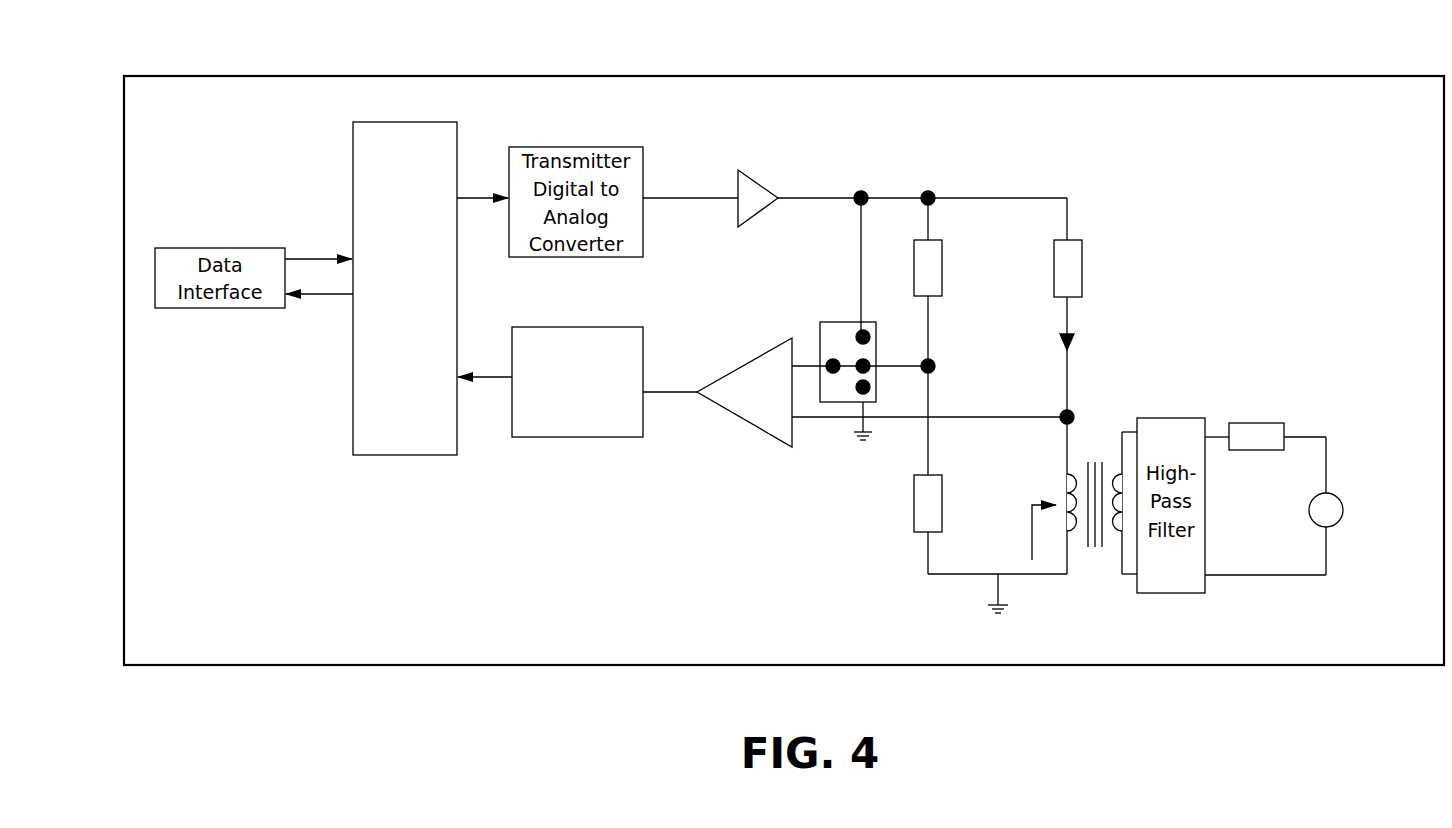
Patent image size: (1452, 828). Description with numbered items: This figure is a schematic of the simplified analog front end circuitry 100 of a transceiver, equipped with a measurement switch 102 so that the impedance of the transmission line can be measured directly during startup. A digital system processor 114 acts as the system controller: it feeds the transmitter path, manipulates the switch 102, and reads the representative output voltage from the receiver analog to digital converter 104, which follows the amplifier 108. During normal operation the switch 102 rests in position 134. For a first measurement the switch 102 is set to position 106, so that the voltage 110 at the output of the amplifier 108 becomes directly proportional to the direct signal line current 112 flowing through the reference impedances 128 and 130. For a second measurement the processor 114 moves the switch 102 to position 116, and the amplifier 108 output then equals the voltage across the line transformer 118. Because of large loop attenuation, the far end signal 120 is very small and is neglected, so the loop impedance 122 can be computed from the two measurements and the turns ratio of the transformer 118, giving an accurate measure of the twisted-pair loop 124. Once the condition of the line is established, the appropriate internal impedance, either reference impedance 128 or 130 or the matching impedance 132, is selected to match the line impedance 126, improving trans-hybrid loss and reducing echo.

The analog front end circuitry 100 is at (1175, 72).
The switch 102 is at (869, 372).
The analog to digital converter 104 is at (556, 441).
The switch position 106 is at (833, 366).
The amplifier 108 is at (728, 414).
The voltage at amplifier output 110 is at (668, 396).
The direct signal line current 112 is at (1114, 323).
The digital system processor 114 is at (344, 172).
The switch position 116 is at (861, 390).
The line transformer 118 is at (1092, 551).
The far end signal 120 is at (1350, 522).
The impedance 122 is at (1030, 496).
The twisted-pair loop 124 is at (1242, 580).
The line impedance 126 is at (1291, 421).
The reference impedance 128 is at (946, 246).
The reference impedance 130 is at (1085, 243).
The matching impedance 132 is at (898, 517).
The switch position 134 is at (867, 363).